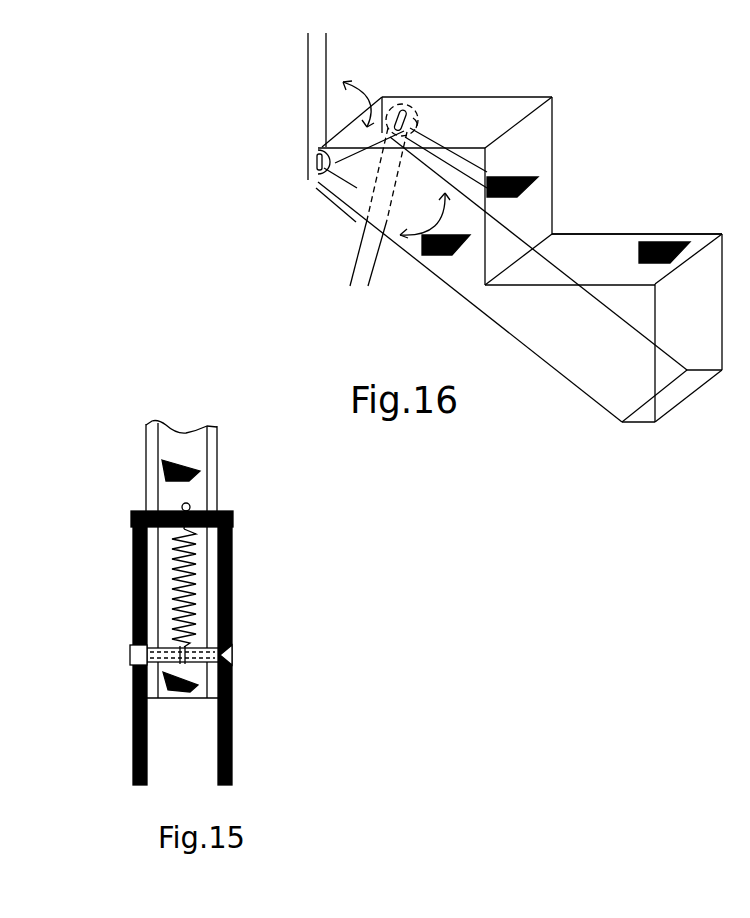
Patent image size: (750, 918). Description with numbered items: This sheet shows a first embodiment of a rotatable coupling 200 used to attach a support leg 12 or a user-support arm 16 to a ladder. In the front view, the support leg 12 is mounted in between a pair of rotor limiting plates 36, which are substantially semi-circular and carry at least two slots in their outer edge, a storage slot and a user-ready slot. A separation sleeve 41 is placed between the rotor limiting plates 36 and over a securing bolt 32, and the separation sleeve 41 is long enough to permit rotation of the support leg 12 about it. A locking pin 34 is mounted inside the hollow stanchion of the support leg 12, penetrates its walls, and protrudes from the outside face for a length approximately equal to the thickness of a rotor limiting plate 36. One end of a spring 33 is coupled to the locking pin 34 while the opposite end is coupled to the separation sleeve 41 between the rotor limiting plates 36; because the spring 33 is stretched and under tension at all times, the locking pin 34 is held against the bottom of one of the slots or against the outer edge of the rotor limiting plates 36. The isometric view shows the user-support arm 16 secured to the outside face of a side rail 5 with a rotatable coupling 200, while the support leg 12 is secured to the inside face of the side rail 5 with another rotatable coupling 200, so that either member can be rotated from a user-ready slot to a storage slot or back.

In FIG. 16, the side rail 5 is at (620, 275).
In FIG. 16, the support leg 12 is at (362, 268).
In FIG. 15, the support leg 12 is at (146, 423).
In FIG. 16, the user-support arm 16 is at (315, 47).
In FIG. 15, the user-support arm 16 is at (110, 560).
In FIG. 15, the securing bolt 32 is at (240, 654).
In FIG. 15, the spring 33 is at (172, 586).
In FIG. 15, the locking pin 34 is at (131, 519).
In FIG. 16, the rotor limiting plate 36 is at (420, 109).
In FIG. 15, the rotor limiting plate 36 is at (133, 743).
In FIG. 15, the separation sleeve 41 is at (153, 645).
In FIG. 16, the rotatable coupling 200 is at (490, 80).
In FIG. 15, the rotatable coupling 200 is at (202, 647).